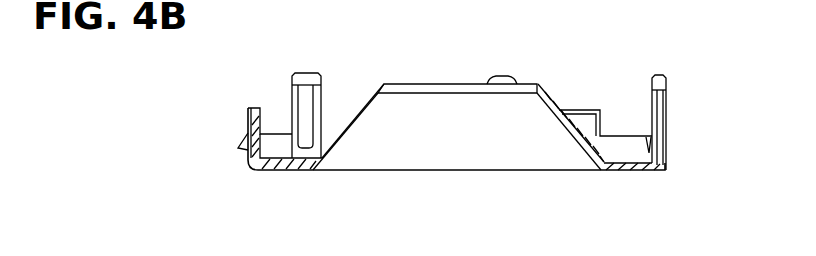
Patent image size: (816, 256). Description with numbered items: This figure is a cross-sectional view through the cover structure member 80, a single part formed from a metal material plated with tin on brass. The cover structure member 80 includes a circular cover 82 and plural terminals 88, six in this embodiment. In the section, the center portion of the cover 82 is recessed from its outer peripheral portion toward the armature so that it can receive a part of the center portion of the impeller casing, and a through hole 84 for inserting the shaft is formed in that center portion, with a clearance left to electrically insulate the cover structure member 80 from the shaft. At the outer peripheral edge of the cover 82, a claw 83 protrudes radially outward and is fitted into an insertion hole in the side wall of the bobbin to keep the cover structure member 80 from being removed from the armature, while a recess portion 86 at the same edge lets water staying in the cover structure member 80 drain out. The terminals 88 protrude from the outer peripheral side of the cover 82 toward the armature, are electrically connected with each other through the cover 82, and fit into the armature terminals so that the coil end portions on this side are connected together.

The cover structure member 80 is at (655, 172).
The cover 82 is at (590, 157).
The claw 83 is at (240, 146).
The through hole 84 is at (436, 93).
The recess portion 86 is at (670, 163).
The terminal 88 is at (303, 76).